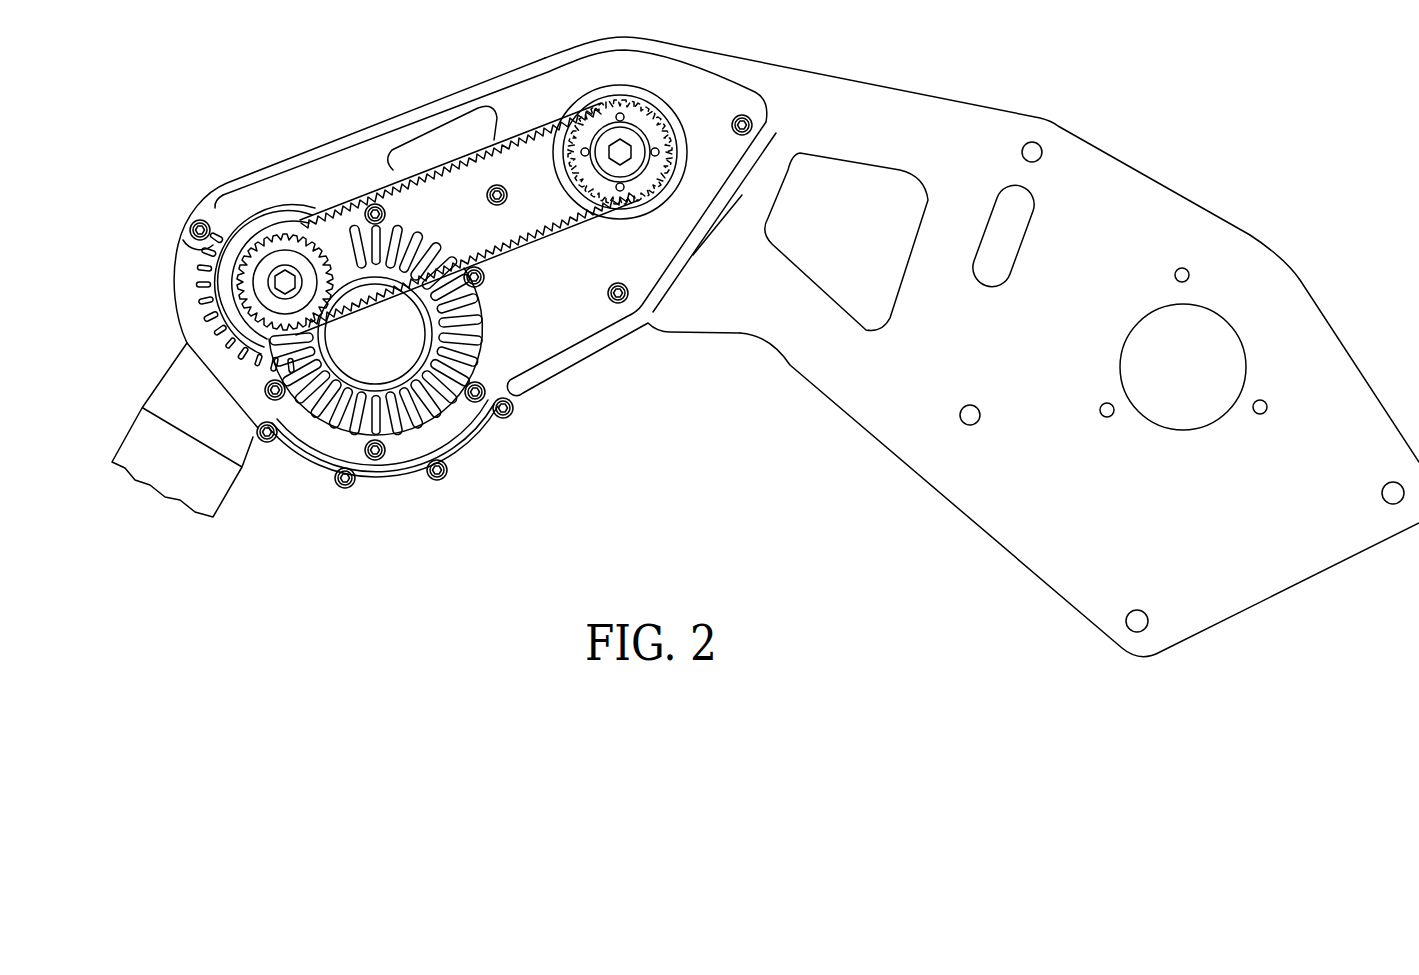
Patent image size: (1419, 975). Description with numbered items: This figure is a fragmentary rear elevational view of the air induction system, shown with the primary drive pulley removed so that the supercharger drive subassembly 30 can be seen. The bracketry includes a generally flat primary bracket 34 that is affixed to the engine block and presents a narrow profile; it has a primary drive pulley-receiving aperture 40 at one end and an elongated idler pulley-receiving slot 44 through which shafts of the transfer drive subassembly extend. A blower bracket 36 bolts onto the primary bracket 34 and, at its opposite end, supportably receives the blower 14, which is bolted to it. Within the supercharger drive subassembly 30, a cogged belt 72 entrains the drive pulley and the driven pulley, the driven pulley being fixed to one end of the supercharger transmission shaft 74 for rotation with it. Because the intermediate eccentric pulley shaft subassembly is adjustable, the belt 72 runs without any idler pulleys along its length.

The blower 14 is at (160, 407).
The supercharger drive subassembly 30 is at (350, 178).
The primary bracket 34 is at (1035, 558).
The blower bracket 36 is at (553, 91).
The primary drive pulley-receiving aperture 40 is at (1175, 398).
The elongated idler pulley-receiving slot 44 is at (998, 266).
The belt 72 is at (458, 158).
The supercharger transmission shaft 74 is at (270, 272).